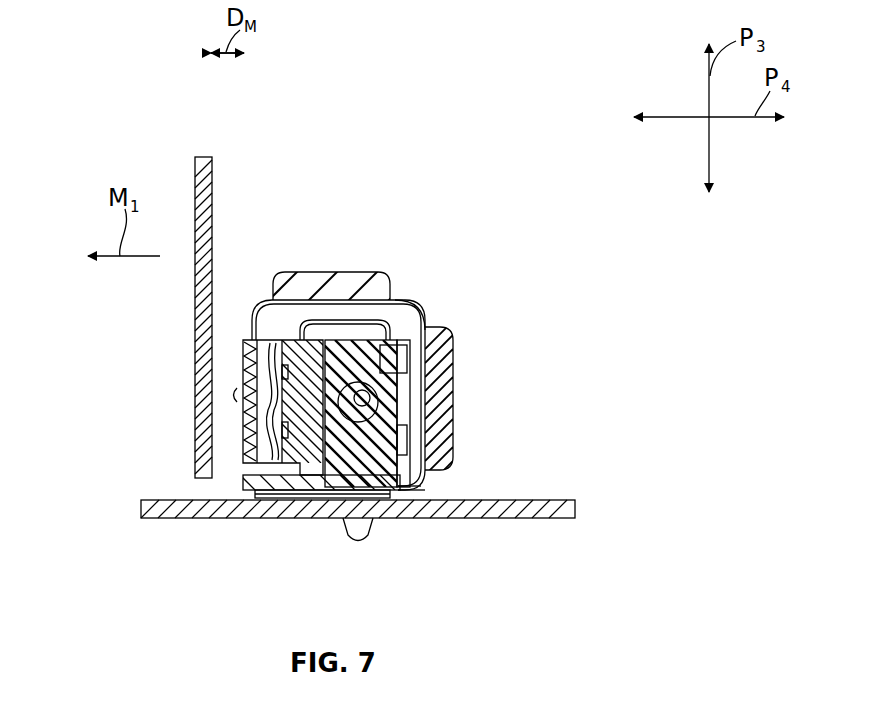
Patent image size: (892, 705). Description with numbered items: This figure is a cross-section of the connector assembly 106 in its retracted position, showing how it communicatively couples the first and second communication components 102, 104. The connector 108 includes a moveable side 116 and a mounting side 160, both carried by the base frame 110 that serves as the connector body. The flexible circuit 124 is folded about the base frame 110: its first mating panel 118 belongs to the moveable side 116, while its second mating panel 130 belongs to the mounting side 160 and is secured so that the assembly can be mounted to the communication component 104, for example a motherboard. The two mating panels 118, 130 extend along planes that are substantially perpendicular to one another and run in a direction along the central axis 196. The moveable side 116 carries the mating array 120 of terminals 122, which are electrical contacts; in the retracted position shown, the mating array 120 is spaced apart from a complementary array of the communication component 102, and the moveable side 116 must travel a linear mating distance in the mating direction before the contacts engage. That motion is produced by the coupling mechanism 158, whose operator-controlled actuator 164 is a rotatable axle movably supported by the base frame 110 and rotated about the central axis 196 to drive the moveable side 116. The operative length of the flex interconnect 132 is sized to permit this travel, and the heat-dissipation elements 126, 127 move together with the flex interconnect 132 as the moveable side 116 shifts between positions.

The first communication component 102 is at (195, 172).
The second communication component 104 is at (528, 500).
The connector assembly 106 is at (430, 214).
The connector 108 is at (334, 340).
The base frame 110 is at (388, 396).
The moveable side 116 is at (232, 357).
The first mating panel 118 is at (262, 340).
The mating array 120 is at (232, 427).
The terminals 122 is at (268, 431).
The flexible circuit 124 is at (451, 305).
The heat-dissipation element 126 is at (295, 267).
The heat-dissipation element 127 is at (466, 353).
The second mating panel 130 is at (385, 503).
The flex interconnect 132 is at (405, 300).
The coupling mechanism 158 is at (258, 462).
The mounting side 160 is at (300, 500).
The actuator 164 is at (405, 483).
The central axis 196 is at (366, 396).